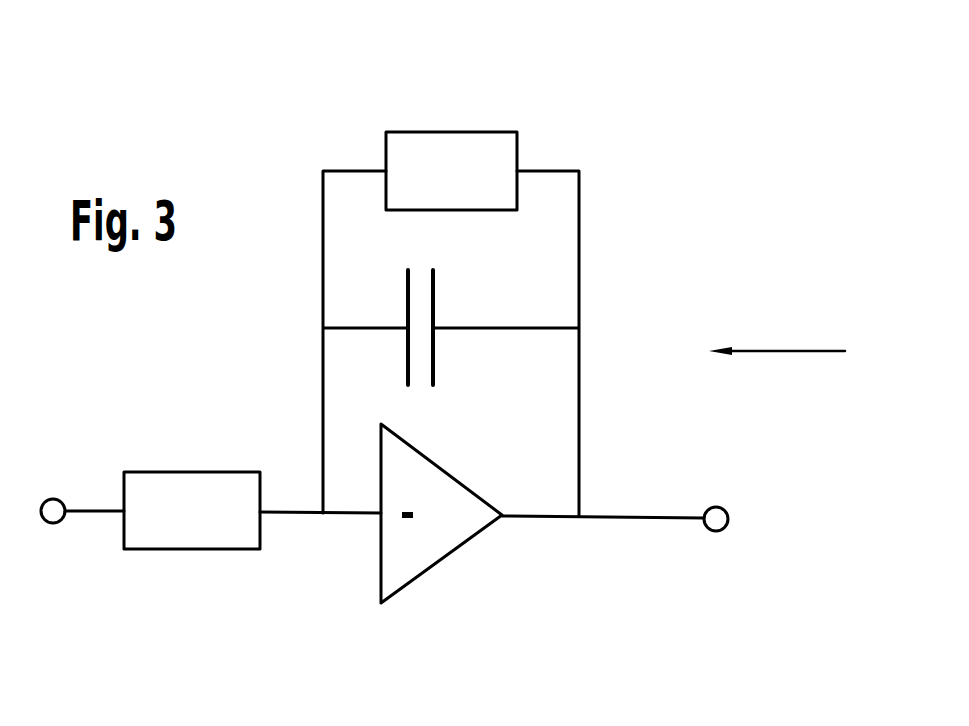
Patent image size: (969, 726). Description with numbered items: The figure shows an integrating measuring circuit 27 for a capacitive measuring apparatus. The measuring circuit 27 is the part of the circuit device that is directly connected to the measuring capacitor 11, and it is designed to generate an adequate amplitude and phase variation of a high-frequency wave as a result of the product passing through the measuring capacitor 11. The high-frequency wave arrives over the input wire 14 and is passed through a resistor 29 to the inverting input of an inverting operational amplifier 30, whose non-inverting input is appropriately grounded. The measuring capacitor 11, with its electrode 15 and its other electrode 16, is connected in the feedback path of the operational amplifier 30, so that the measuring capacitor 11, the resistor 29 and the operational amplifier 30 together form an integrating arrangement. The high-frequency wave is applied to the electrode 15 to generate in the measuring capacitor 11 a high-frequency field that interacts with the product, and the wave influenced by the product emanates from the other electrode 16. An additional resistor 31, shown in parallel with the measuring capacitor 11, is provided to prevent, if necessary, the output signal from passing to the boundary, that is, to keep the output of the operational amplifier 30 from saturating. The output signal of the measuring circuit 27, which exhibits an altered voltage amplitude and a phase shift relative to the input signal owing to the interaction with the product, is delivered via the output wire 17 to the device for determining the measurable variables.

The measuring capacitor 11 is at (384, 276).
The input wire 14 is at (92, 509).
The electrode 15 is at (408, 297).
The other electrode 16 is at (433, 298).
The output wire 17 is at (650, 520).
The measuring circuit 27 is at (800, 351).
The resistor 29 is at (193, 550).
The inverting operational amplifier 30 is at (433, 567).
The additional resistor 31 is at (450, 130).